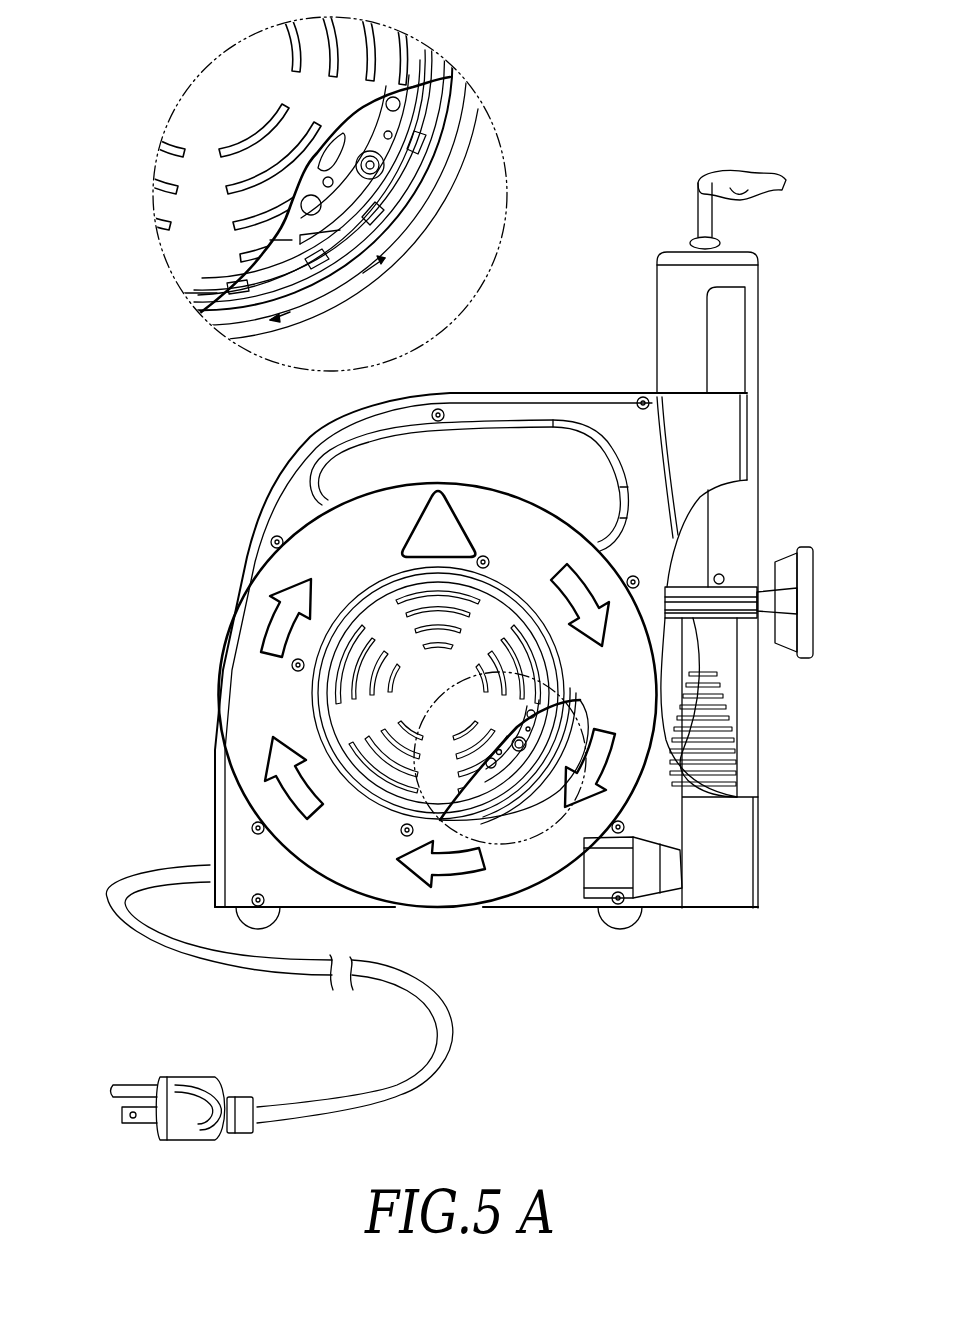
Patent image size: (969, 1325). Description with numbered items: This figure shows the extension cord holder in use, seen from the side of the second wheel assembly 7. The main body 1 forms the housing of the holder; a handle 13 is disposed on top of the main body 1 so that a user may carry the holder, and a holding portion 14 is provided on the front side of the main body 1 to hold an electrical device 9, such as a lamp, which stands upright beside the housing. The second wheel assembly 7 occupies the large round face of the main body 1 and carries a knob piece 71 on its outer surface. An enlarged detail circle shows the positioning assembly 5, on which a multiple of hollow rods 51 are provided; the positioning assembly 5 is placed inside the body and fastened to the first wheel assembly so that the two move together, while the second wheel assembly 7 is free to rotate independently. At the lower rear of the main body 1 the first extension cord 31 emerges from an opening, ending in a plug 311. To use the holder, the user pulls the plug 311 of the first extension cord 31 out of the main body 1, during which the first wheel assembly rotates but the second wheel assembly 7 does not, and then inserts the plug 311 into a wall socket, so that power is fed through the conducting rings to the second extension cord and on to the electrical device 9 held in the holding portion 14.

The main body 1 is at (302, 438).
The positioning assembly 5 is at (424, 127).
The second wheel assembly 7 is at (226, 96).
The electrical device 9 is at (758, 247).
The handle 13 is at (548, 393).
The holding portion 14 is at (718, 452).
The first extension cord 31 is at (403, 1095).
The hollow rods 51 is at (407, 200).
The knob piece 71 is at (433, 525).
The plug 311 is at (170, 1080).